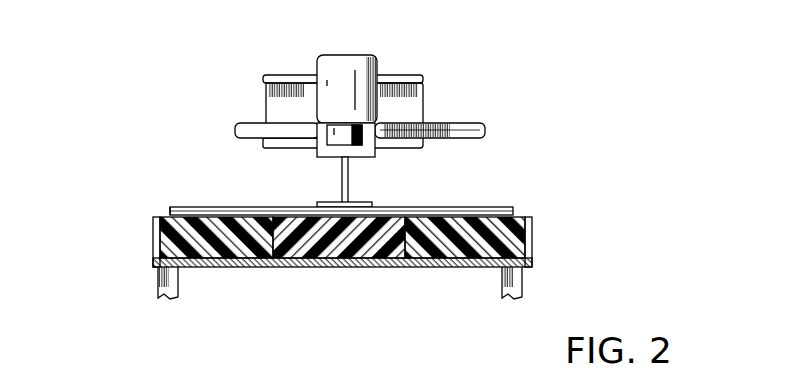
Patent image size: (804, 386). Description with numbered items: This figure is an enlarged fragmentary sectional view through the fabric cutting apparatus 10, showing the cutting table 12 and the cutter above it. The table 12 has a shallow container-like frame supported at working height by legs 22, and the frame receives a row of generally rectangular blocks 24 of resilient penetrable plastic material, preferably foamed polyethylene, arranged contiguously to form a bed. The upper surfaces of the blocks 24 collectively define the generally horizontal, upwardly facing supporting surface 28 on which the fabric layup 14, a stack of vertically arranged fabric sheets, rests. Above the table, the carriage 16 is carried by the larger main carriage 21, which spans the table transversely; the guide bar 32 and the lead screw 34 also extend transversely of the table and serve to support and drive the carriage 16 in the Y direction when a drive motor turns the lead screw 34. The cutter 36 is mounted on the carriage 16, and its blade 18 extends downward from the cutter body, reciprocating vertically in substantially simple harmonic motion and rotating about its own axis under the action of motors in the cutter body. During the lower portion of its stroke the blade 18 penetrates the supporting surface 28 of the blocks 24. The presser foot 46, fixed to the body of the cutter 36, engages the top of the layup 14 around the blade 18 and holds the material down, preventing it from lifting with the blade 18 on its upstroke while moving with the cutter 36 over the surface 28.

The cutting apparatus 10 is at (419, 64).
The table 12 is at (349, 235).
The fabric layup 14 is at (500, 208).
The carriage 16 is at (381, 164).
The blade 18 is at (341, 176).
The main carriage 21 is at (425, 80).
The legs 22 is at (546, 289).
The blocks 24 is at (228, 258).
The supporting surface 28 is at (166, 216).
The guide bar 32 is at (253, 127).
The lead screw 34 is at (437, 123).
The cutter 36 is at (343, 79).
The presser foot 46 is at (372, 205).